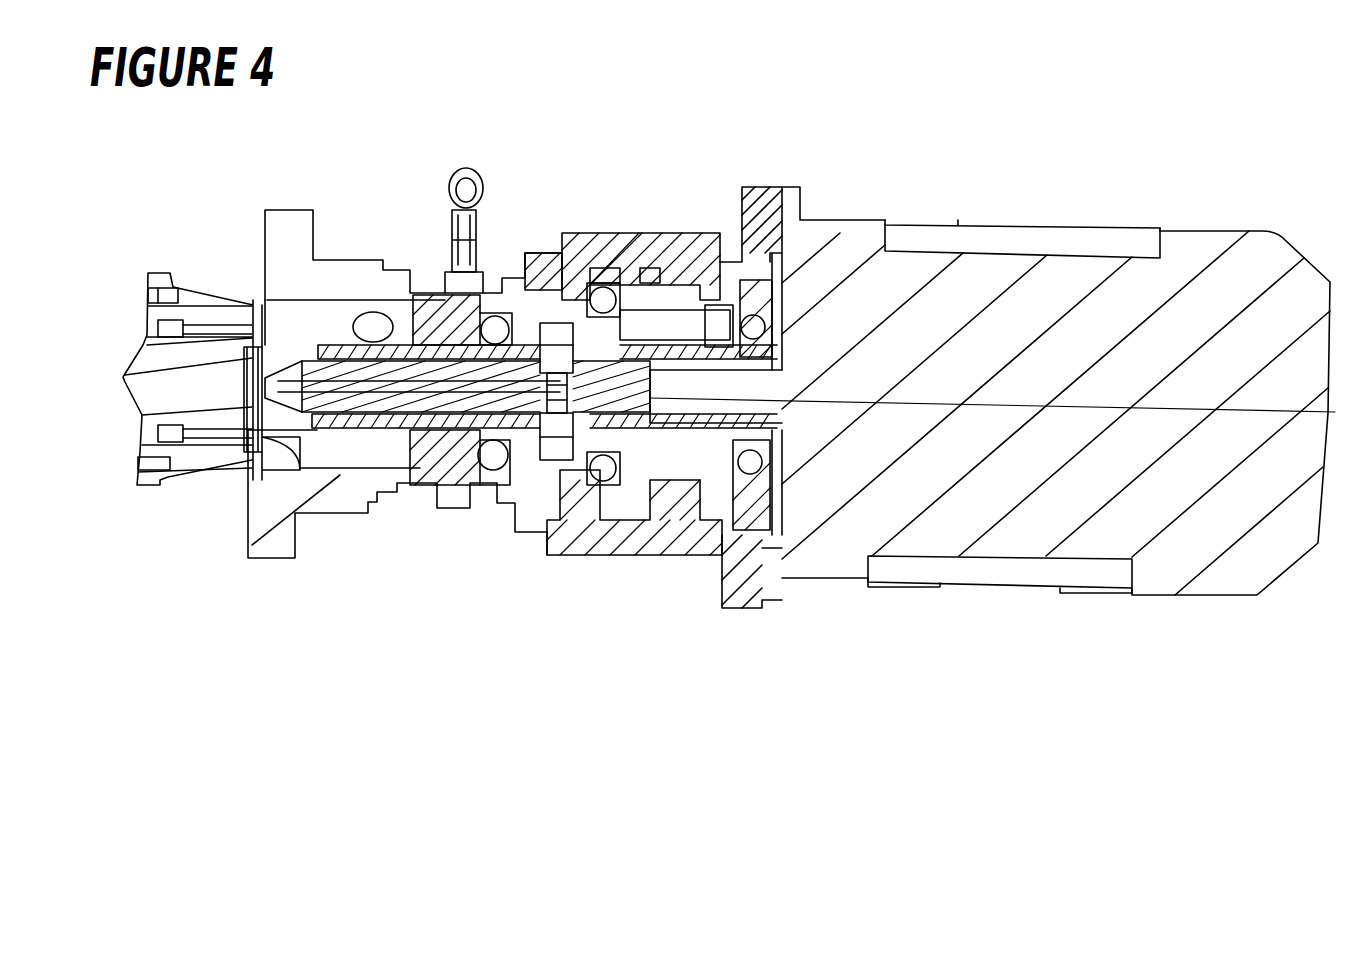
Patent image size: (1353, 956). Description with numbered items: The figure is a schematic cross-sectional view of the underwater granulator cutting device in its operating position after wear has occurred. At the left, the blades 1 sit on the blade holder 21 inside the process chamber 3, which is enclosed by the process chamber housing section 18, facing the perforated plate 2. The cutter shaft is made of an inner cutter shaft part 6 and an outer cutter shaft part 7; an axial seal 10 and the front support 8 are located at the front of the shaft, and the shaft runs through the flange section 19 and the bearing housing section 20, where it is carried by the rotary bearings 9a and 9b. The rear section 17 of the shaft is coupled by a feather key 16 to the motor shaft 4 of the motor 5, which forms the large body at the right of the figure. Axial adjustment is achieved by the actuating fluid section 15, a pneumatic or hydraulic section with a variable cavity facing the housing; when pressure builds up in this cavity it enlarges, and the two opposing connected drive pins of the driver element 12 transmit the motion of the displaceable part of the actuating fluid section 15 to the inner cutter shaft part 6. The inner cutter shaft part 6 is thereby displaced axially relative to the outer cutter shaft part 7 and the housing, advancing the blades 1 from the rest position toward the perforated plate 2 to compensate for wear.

The blades 1 is at (282, 300).
The perforated plate 2 is at (255, 325).
The process chamber 3 is at (300, 455).
The motor shaft 4 is at (765, 412).
The motor 5 is at (1256, 263).
The inner cutter shaft part 6 is at (378, 400).
The outer cutter shaft part 7 is at (375, 405).
The front support 8 is at (345, 340).
The rotary bearing 9a is at (541, 300).
The rotary bearing 9b is at (620, 285).
The axial seal 10 is at (320, 345).
The driver element 12 is at (560, 420).
The actuating fluid section 15 is at (662, 517).
The feather key 16 is at (785, 360).
The rear section 17 is at (783, 360).
The process chamber housing section 18 is at (322, 285).
The flange section 19 is at (520, 300).
The bearing housing section 20 is at (588, 270).
The blade holder 21 is at (293, 440).